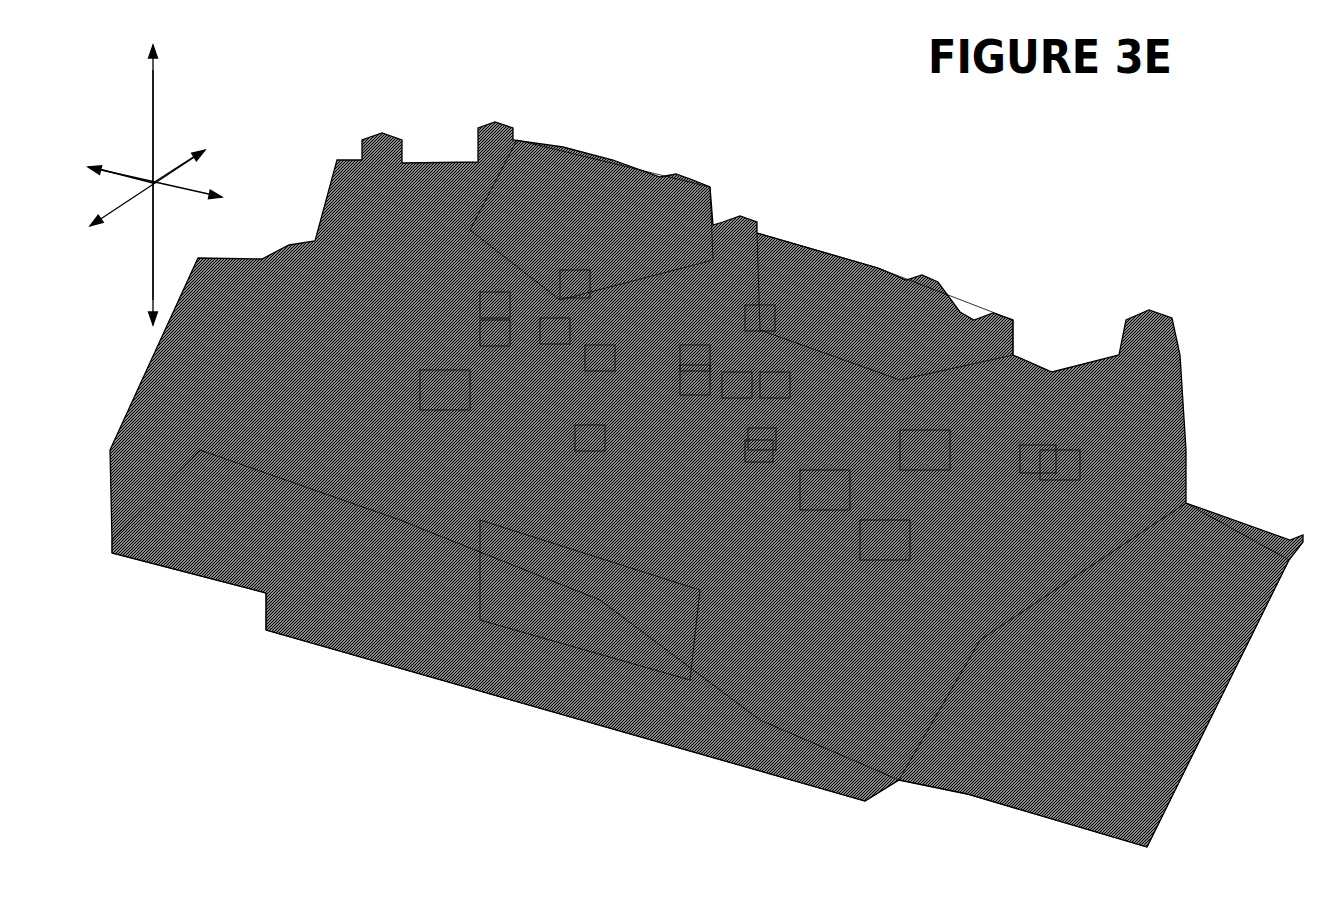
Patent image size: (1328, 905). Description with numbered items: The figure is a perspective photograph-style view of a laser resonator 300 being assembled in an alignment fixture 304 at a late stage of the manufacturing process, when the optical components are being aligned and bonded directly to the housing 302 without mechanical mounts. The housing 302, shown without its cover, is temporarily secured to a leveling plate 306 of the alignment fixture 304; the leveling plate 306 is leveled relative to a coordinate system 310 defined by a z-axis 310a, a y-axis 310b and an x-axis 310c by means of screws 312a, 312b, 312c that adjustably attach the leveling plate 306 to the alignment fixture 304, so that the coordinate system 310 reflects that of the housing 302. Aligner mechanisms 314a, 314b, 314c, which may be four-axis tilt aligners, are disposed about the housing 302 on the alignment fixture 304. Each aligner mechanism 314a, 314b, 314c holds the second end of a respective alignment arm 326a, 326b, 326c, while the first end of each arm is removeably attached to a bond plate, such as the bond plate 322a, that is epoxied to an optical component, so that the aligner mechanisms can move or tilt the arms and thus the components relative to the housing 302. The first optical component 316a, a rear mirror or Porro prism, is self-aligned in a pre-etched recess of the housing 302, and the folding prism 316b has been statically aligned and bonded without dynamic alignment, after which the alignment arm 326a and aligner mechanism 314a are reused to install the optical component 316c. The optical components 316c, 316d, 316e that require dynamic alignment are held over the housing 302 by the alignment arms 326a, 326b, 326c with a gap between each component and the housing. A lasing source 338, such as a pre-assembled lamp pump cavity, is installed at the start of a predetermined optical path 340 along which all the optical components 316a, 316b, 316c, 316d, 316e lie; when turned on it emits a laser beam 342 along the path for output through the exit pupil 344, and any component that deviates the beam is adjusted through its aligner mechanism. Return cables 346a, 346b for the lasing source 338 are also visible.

The laser resonator 300 is at (731, 464).
The housing 302 is at (500, 398).
The alignment fixture 304 is at (1025, 673).
The leveling plate 306 is at (842, 487).
The coordinate system 310 is at (117, 75).
The z-axis 310a is at (156, 77).
The y-axis 310b is at (113, 174).
The x-axis 310c is at (175, 165).
The screw 312a is at (445, 377).
The screw 312b is at (920, 447).
The screw 312c is at (885, 535).
The aligner mechanism 314a is at (621, 183).
The aligner mechanism 314b is at (578, 659).
The aligner mechanism 314c is at (881, 270).
The first optical component 316a is at (697, 378).
The next optical component 316b is at (495, 333).
The optical component 316c is at (553, 330).
The optical component 316d is at (694, 358).
The optical component 316e is at (740, 383).
The bond plate 322a is at (495, 305).
The alignment arm 326a is at (577, 284).
The alignment arm 326b is at (590, 437).
The alignment arm 326c is at (761, 316).
The lasing source 338 is at (600, 358).
The predetermined optical path 340 is at (1050, 465).
The laser beam 342 is at (1037, 456).
The exit pupil 344 is at (789, 386).
The return cable 346a is at (759, 461).
The return cable 346b is at (775, 440).